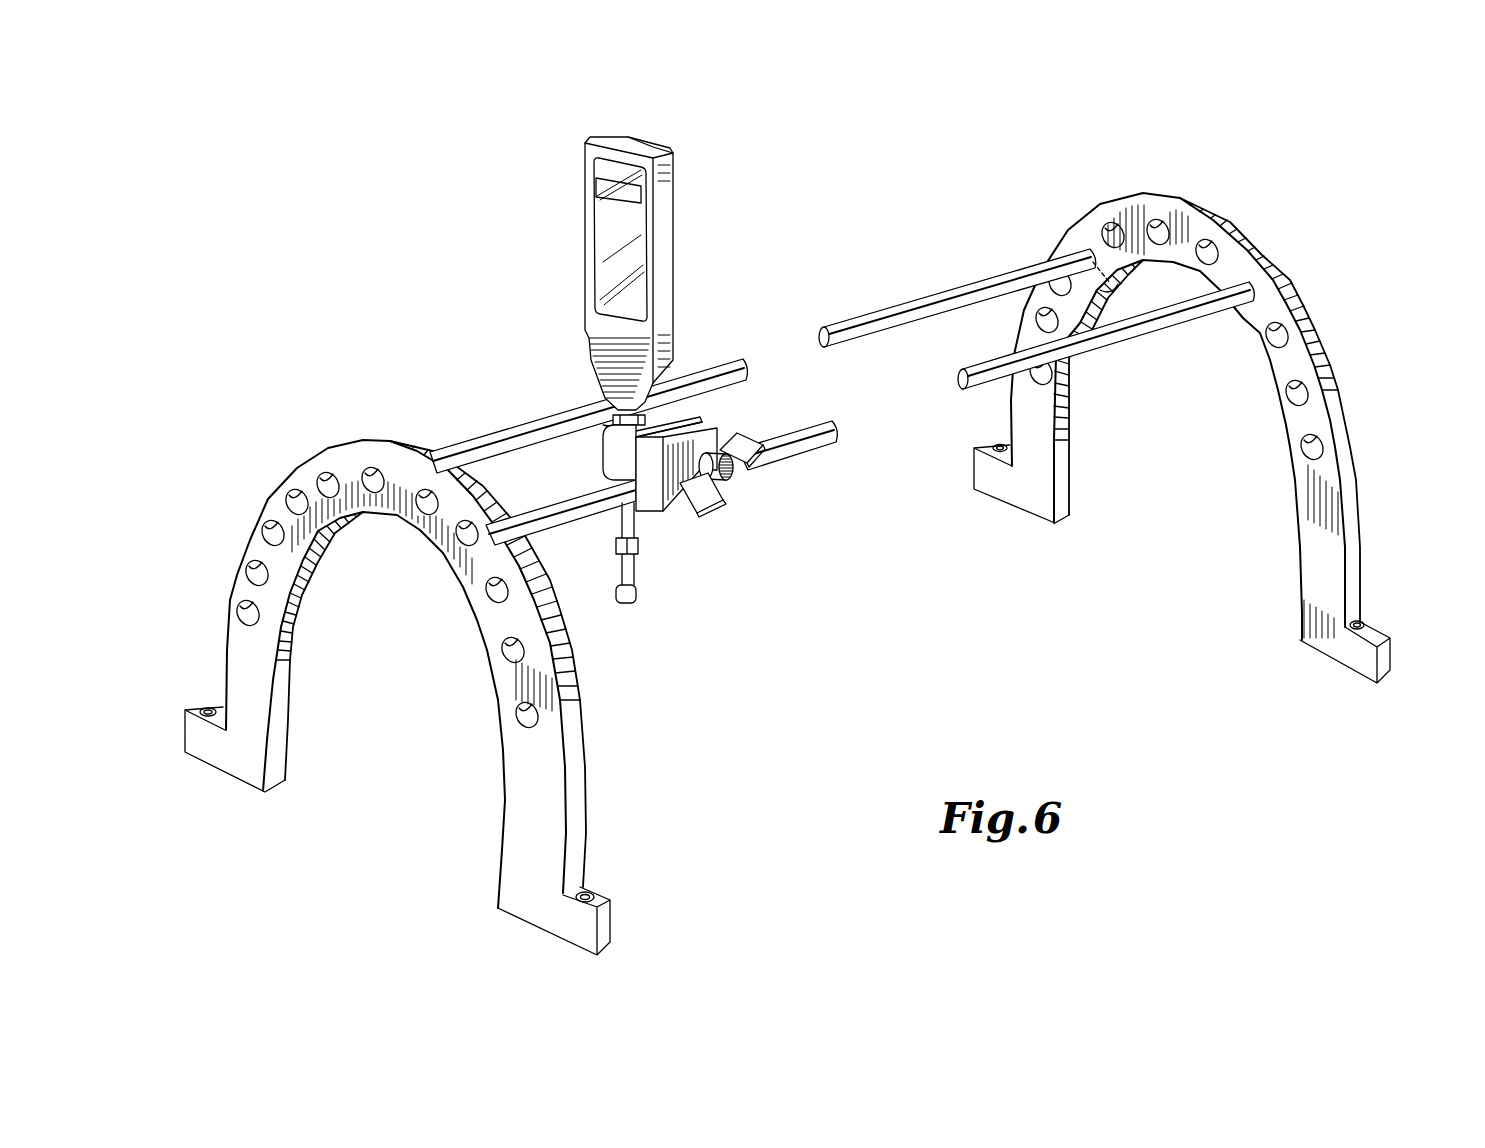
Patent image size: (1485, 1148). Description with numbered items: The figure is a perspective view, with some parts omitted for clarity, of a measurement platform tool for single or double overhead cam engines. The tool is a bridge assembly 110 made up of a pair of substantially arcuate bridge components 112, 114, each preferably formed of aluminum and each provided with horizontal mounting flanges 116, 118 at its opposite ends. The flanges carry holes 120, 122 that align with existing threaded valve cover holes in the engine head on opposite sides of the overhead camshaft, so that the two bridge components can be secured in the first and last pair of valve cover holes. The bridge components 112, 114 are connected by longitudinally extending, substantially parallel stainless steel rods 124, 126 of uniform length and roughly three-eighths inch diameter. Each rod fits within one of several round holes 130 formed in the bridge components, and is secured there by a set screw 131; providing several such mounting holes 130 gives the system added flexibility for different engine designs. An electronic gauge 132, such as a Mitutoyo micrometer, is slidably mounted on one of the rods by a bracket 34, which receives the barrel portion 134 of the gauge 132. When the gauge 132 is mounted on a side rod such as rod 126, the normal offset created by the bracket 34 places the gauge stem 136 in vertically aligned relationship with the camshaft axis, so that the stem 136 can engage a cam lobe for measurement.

The bridge assembly 110 is at (806, 518).
The bridge component 112 is at (592, 788).
The bridge component 114 is at (1368, 504).
The horizontal mounting flange 116 is at (190, 712).
The horizontal mounting flange 118 is at (610, 903).
The flange hole 120 is at (208, 706).
The flange hole 122 is at (586, 896).
The rod 124 is at (878, 316).
The rod 126 is at (1003, 358).
The round hole 130 is at (517, 707).
The set screw 131 is at (1116, 285).
The electronic gauge 132 is at (675, 242).
The bracket 34 is at (714, 431).
The barrel portion 134 is at (637, 523).
The gauge stem 136 is at (637, 577).